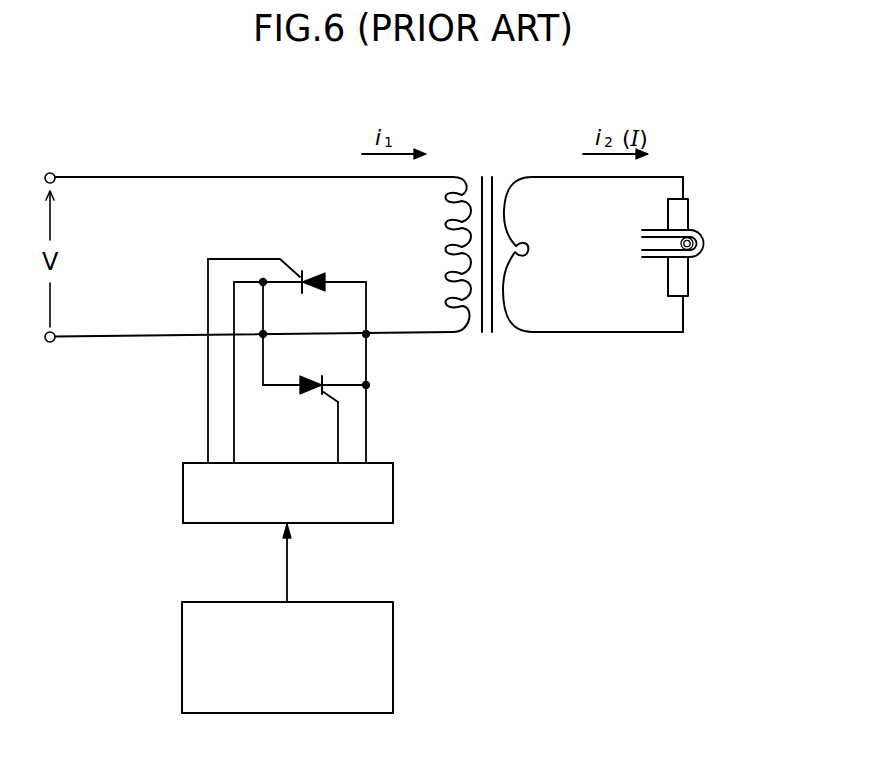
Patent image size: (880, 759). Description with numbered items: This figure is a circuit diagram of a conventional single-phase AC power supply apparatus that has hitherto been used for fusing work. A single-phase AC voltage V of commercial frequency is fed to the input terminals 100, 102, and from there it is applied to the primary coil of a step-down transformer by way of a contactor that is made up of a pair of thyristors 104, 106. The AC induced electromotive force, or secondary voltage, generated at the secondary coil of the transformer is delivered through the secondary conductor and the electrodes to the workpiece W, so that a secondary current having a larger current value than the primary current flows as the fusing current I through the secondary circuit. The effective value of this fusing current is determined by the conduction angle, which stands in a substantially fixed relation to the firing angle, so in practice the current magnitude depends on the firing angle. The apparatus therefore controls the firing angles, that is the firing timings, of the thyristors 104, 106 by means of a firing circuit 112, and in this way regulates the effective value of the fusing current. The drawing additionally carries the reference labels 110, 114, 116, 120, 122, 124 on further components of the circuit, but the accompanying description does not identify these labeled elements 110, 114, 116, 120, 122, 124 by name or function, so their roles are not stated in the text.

The input terminal 110 is at (50, 172).
The firing circuit 112 is at (50, 343).
The thyristor 114 is at (319, 271).
The thyristor 116 is at (308, 397).
The welding transformer 120 is at (490, 166).
The control unit 122 is at (393, 636).
The firing circuit 124 is at (382, 463).
The thyristor 104 is at (690, 219).
The thyristor 106 is at (689, 280).
The input terminal 100 is at (746, 232).
The input terminal 102 is at (753, 218).